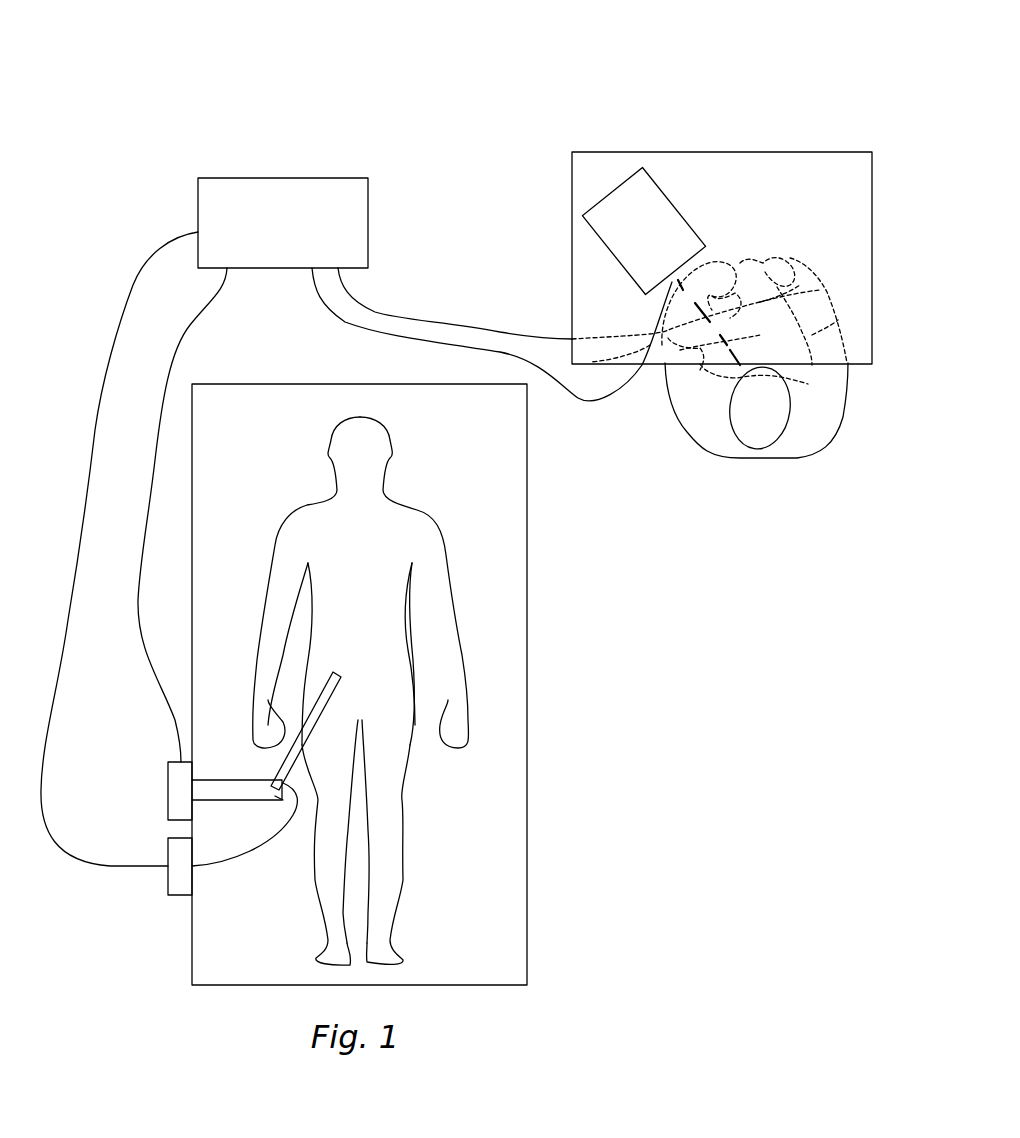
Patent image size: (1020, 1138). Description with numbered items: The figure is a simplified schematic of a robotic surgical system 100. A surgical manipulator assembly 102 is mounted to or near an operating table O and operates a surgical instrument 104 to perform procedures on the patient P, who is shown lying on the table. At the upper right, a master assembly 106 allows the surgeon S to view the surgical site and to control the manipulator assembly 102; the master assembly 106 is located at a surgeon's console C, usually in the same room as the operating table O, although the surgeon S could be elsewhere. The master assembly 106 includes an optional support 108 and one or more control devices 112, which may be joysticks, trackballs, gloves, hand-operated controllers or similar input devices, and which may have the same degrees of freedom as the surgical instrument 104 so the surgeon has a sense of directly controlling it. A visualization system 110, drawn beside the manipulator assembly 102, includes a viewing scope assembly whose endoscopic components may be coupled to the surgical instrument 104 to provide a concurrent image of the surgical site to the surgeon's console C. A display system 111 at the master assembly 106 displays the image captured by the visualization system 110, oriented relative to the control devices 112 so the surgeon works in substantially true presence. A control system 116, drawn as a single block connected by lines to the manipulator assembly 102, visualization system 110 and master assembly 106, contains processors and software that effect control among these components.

The robotic surgical system 100 is at (377, 72).
The surgical manipulator assembly 102 is at (158, 801).
The surgical instrument 104 is at (340, 698).
The master assembly 106 is at (703, 130).
The support 108 is at (832, 156).
The visualization system 110 is at (168, 880).
The display system 111 is at (626, 205).
The control device 112 is at (758, 264).
The control system 116 is at (274, 188).
The patient P is at (408, 520).
The operating table O is at (529, 680).
The surgeon S is at (797, 458).
The surgeon's console C is at (762, 156).